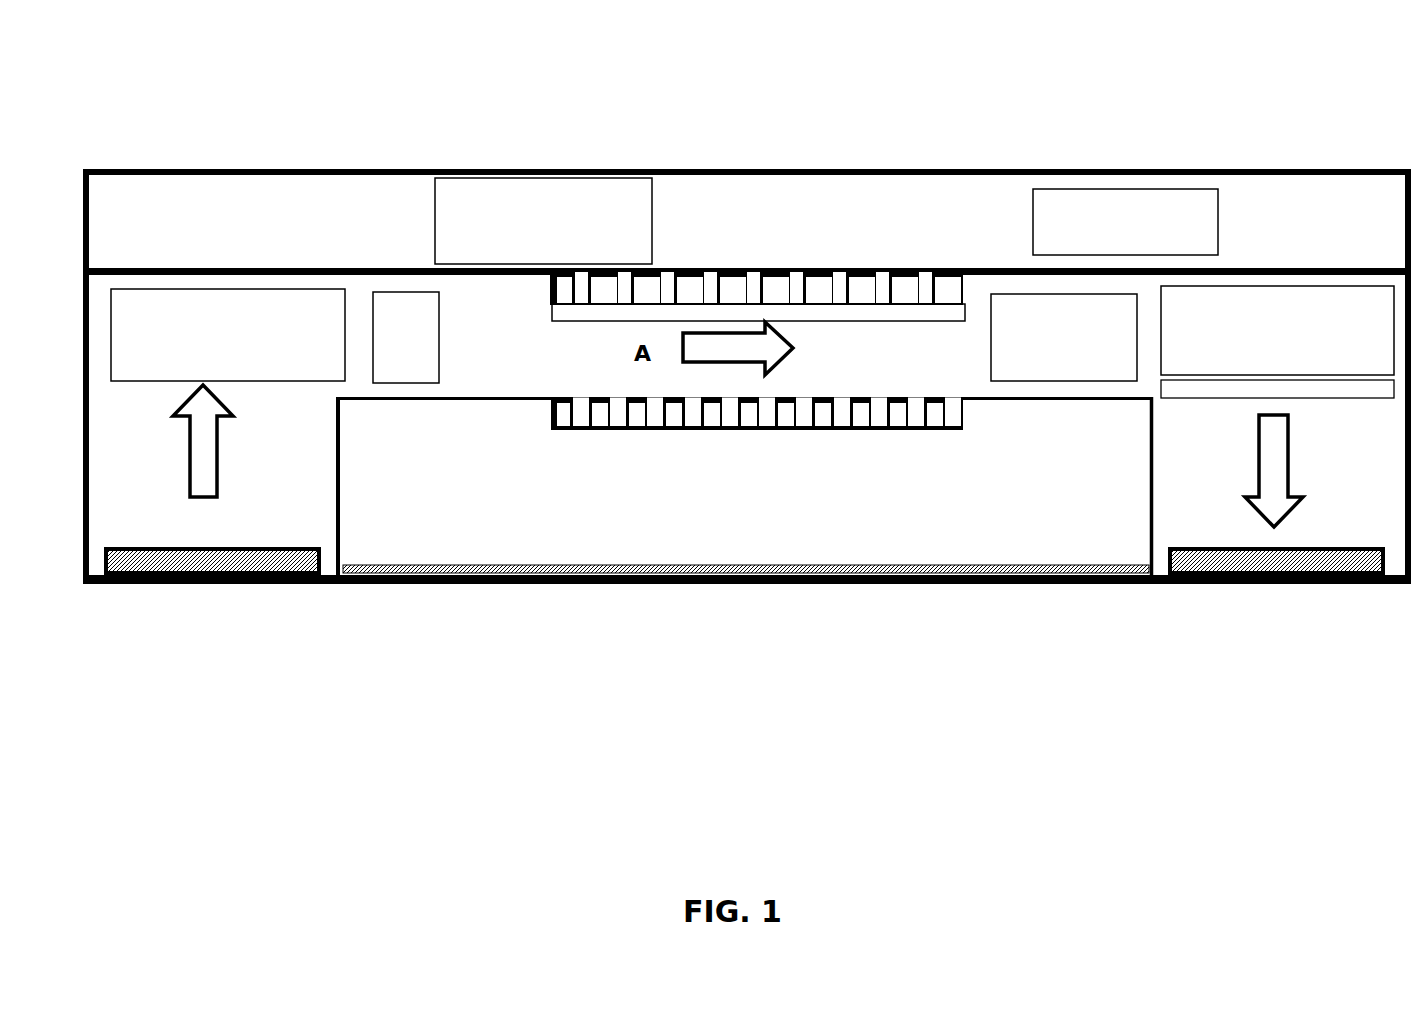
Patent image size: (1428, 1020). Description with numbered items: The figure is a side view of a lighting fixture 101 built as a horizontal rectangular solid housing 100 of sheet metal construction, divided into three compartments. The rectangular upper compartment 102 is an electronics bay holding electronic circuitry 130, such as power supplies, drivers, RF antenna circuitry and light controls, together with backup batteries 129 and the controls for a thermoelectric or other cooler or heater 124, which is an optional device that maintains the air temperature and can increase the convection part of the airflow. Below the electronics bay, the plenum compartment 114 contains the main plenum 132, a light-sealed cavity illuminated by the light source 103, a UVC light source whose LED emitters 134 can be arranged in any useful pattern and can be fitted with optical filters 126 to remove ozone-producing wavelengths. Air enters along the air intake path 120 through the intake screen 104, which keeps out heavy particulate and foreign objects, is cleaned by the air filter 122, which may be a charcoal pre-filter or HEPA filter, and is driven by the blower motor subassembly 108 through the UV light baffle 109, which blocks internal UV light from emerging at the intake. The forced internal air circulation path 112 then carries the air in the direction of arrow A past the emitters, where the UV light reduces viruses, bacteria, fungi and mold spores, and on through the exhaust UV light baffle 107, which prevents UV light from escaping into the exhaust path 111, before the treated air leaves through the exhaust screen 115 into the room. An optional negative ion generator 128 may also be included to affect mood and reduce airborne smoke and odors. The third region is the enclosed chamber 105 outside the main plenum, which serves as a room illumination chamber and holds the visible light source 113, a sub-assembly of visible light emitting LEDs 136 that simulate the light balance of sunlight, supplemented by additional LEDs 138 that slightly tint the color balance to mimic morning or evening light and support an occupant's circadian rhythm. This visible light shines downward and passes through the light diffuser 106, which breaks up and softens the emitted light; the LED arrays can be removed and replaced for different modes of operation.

The housing 100 is at (1115, 168).
The lighting fixture 101 is at (600, 175).
The electronics bay compartment 102 is at (990, 237).
The light source 103 is at (813, 270).
The intake screen 104 is at (180, 575).
The enclosed chamber 105 is at (480, 530).
The light diffuser 106 is at (620, 562).
The exhaust UV light baffle 107 is at (1235, 286).
The blower motor subassembly 108 is at (130, 289).
The UV light baffle 109 is at (421, 290).
The exhaust path 111 is at (1293, 465).
The internal air circulation path 112 is at (785, 360).
The visible light source 113 is at (965, 413).
The plenum compartment 114 is at (583, 343).
The exhaust screen 115 is at (1260, 575).
The air intake path 120 is at (218, 432).
The air filter 122 is at (310, 575).
The cooler or heater 124 is at (1064, 337).
The optical filter 126 is at (872, 310).
The negative ion generator 128 is at (1320, 393).
The backup battery 129 is at (543, 221).
The electronic circuitry 130 is at (1125, 222).
The main plenum 132 is at (491, 332).
The LED emitters 134 is at (888, 287).
The visible light emitting LEDs 136 is at (690, 413).
The additional LEDs 138 is at (917, 410).